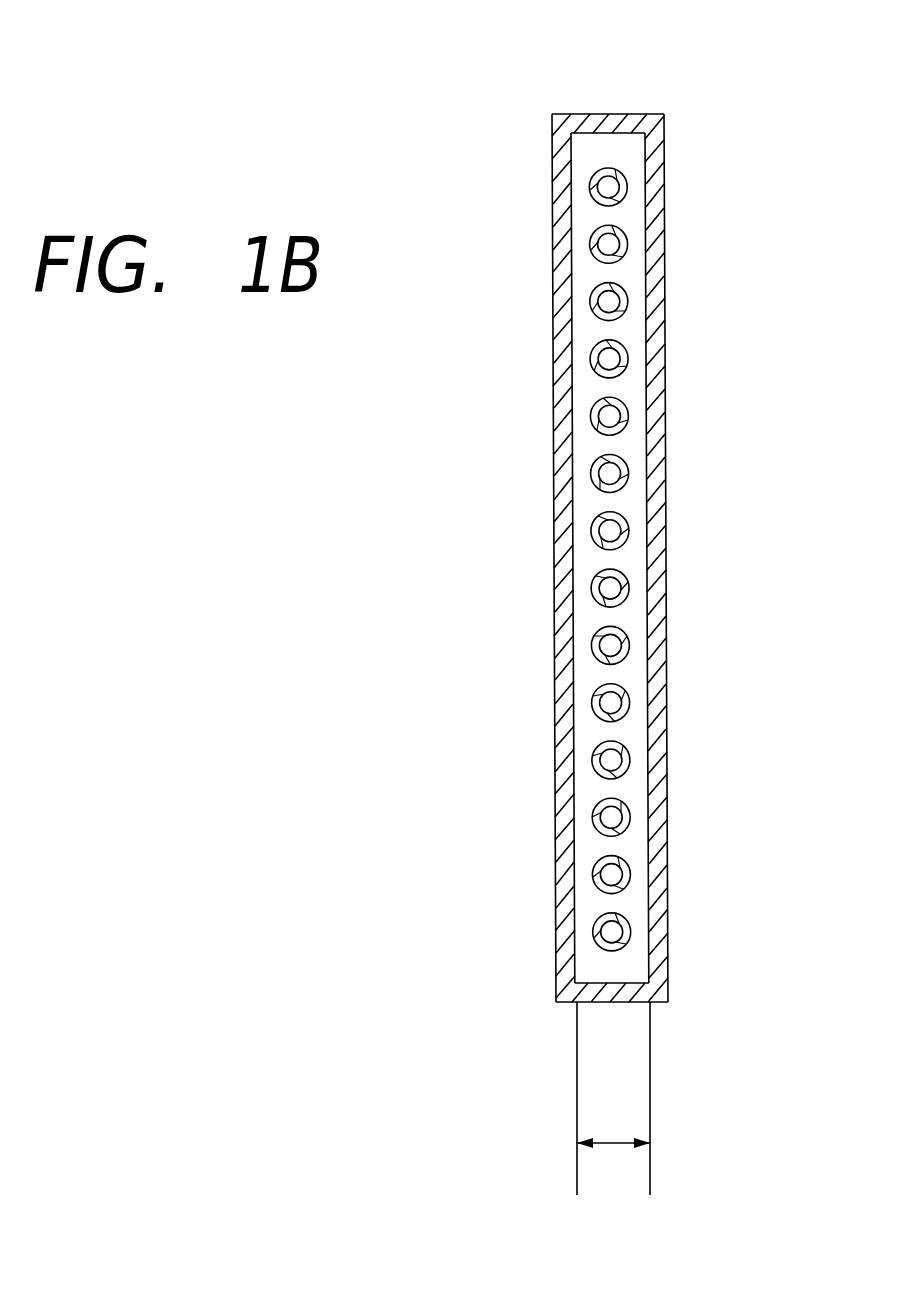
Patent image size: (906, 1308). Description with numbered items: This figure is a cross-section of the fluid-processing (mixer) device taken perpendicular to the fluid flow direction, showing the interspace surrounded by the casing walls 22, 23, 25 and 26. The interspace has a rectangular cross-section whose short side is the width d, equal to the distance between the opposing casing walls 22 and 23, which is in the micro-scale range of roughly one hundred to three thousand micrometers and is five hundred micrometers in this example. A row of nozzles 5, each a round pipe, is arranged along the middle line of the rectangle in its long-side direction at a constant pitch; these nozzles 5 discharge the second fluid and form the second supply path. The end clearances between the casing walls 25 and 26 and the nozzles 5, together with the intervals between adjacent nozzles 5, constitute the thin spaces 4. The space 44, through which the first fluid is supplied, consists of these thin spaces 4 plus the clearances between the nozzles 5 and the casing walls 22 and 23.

The thin space 4 is at (605, 155).
The nozzle 5 is at (629, 653).
The casing wall 22 is at (660, 357).
The casing wall 23 is at (561, 364).
The casing wall 25 is at (613, 118).
The casing wall 26 is at (617, 1001).
The space 44 is at (632, 187).
The distance between casing walls d is at (613, 1101).